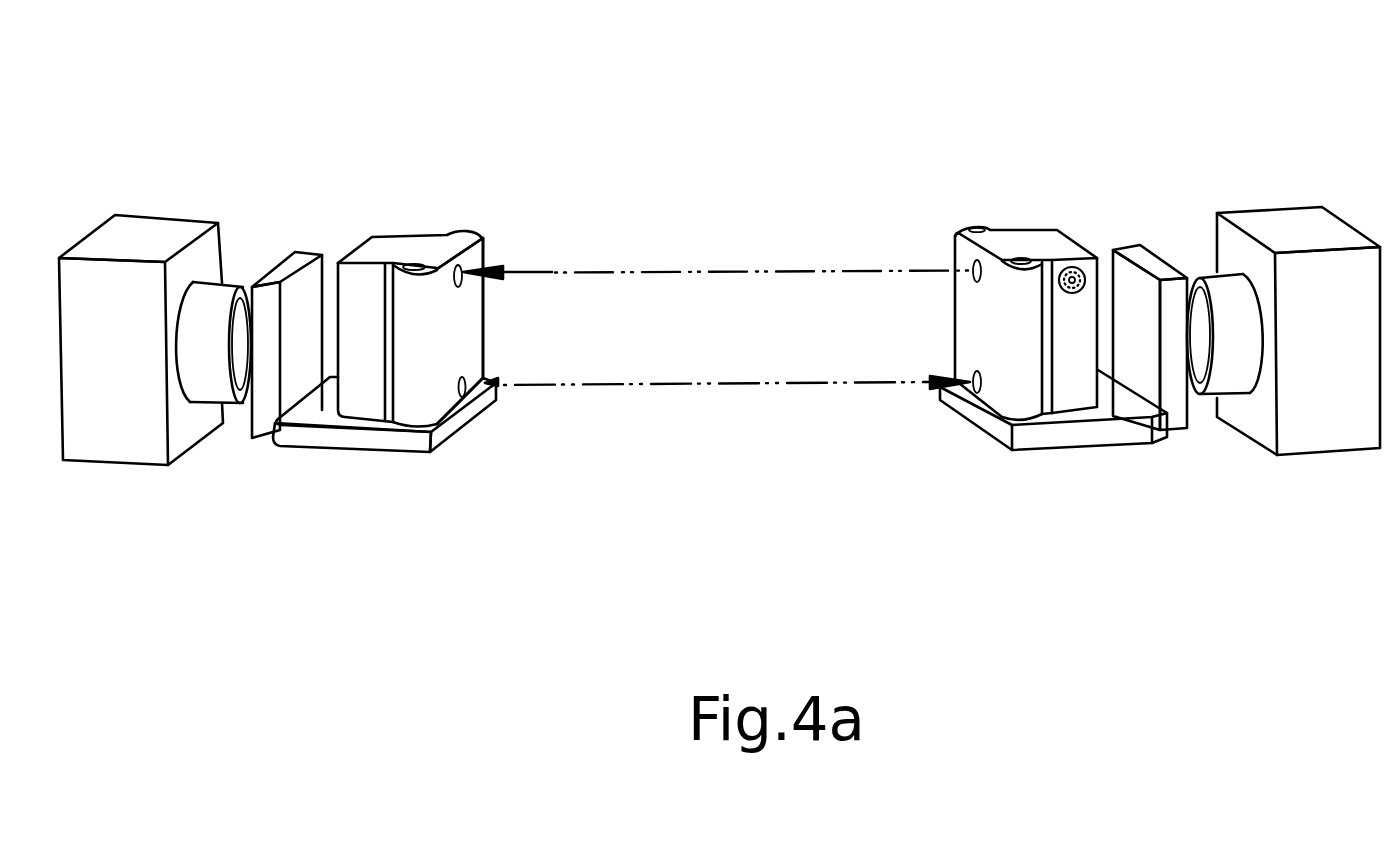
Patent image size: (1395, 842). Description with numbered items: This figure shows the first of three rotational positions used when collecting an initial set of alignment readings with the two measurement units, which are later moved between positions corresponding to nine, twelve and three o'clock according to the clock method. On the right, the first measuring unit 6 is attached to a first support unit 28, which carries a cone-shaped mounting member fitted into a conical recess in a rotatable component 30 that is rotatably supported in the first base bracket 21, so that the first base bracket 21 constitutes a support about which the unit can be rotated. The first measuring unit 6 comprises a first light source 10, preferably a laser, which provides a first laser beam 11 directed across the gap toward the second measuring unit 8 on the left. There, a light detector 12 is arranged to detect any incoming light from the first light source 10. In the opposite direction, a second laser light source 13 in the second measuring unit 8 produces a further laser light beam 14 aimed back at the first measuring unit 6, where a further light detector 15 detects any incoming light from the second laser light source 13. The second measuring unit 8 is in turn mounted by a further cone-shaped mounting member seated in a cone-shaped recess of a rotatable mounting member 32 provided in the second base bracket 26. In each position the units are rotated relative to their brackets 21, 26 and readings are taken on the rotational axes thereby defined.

The first measuring unit 6 is at (971, 344).
The second measuring unit 8 is at (486, 257).
The first light source 10 is at (952, 250).
The first laser beam 11 is at (724, 270).
The light detector 12 is at (486, 254).
The second laser light source 13 is at (450, 377).
The further laser light beam 14 is at (733, 386).
The further light detector 15 is at (984, 375).
The first base bracket 21 is at (1278, 218).
The second base bracket 26 is at (158, 227).
The first support unit 28 is at (1100, 437).
The rotatable component 30 is at (1230, 383).
The rotatable mounting member 32 is at (212, 392).